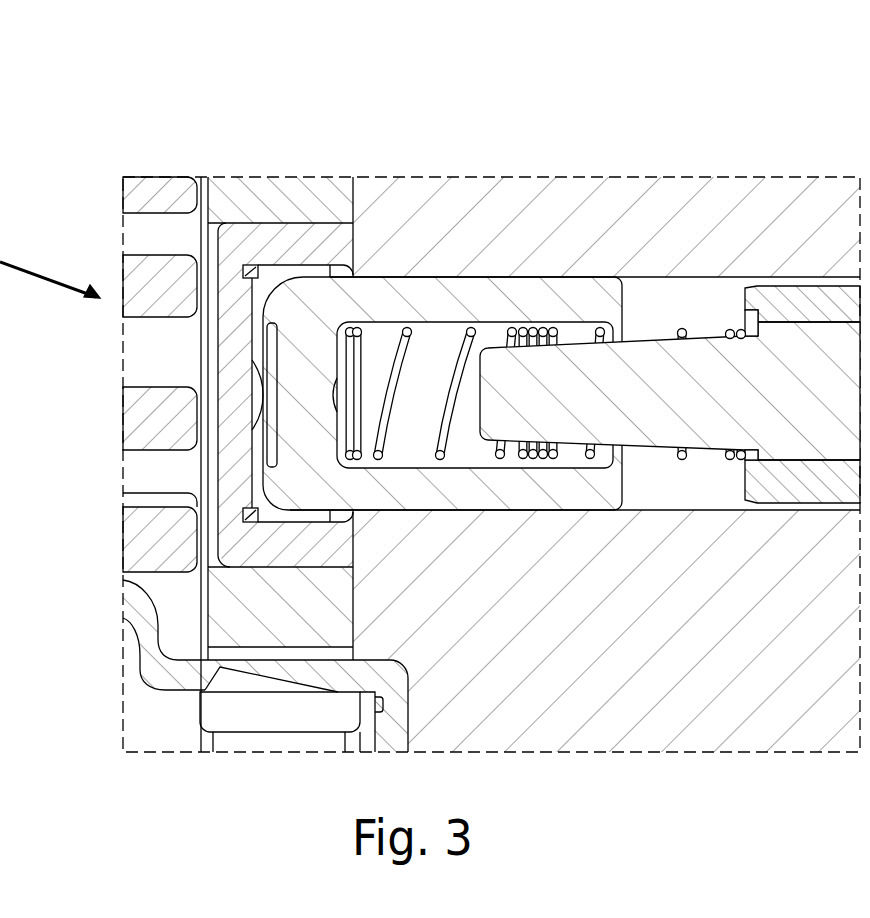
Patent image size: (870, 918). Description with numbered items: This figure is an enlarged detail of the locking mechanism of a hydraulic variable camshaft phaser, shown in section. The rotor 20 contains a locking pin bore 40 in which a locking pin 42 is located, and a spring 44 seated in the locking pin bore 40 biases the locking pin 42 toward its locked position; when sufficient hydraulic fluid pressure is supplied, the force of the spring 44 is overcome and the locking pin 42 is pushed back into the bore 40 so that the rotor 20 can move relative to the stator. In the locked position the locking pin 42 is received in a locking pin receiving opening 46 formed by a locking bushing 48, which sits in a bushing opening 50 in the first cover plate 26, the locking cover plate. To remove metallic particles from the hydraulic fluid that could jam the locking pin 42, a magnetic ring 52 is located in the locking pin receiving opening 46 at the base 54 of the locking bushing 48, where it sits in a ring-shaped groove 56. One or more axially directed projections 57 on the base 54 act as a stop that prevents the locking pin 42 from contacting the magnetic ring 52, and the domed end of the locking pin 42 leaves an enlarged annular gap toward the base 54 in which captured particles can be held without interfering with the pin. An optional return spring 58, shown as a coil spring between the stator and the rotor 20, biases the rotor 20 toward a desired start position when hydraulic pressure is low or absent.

The rotor 20 is at (575, 752).
The first cover plate 26 is at (282, 193).
The locking pin bore 40 is at (698, 289).
The locking pin 42 is at (513, 292).
The spring 44 is at (393, 338).
The locking pin receiving opening 46 is at (257, 504).
The locking bushing 48 is at (267, 548).
The bushing opening 50 is at (297, 230).
The magnetic ring 52 is at (250, 266).
The base 54 is at (230, 337).
The ring-shaped groove 56 is at (243, 524).
The axially directed projection 57 is at (258, 320).
The return spring 58 is at (163, 185).